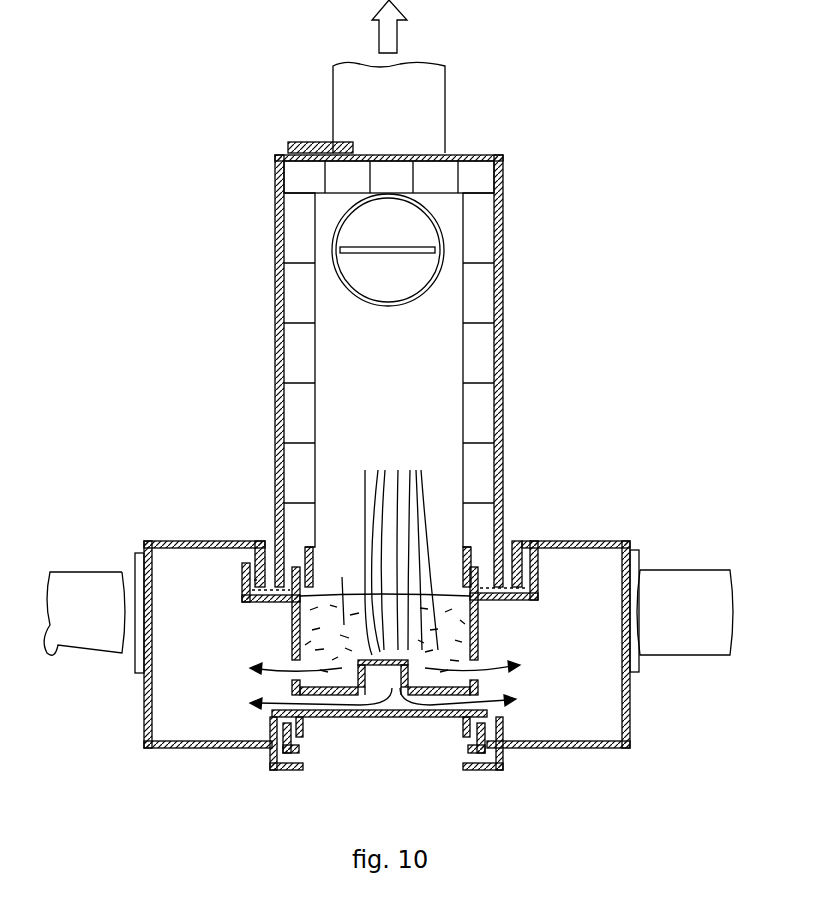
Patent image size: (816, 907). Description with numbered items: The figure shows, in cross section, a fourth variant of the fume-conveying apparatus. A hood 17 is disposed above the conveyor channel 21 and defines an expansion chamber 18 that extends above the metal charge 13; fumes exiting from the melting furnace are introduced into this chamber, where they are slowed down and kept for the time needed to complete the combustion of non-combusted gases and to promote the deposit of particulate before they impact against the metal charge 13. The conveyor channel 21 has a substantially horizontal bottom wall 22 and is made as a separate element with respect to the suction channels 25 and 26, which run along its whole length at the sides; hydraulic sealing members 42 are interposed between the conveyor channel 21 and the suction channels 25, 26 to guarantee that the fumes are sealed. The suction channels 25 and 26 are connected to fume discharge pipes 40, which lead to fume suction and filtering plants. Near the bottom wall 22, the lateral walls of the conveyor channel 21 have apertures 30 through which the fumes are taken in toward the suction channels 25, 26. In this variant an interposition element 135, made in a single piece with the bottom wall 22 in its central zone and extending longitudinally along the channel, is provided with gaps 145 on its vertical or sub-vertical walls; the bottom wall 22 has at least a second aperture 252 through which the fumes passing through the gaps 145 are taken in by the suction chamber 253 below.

The fume discharge pipes 40 is at (430, 122).
The hood 17 is at (275, 291).
The expansion chamber 18 is at (465, 344).
The sealing members 42 is at (262, 540).
The metal charge 13 is at (447, 598).
The interposition element 135 is at (391, 657).
The gaps 145 is at (339, 586).
The bottom wall 22 is at (348, 700).
The second aperture 252 is at (390, 700).
The suction chamber 253 is at (372, 717).
The apertures 30 is at (300, 666).
The conveyor channel 21 is at (437, 720).
The suction pipe 25 is at (205, 749).
The suction pipe 26 is at (600, 749).